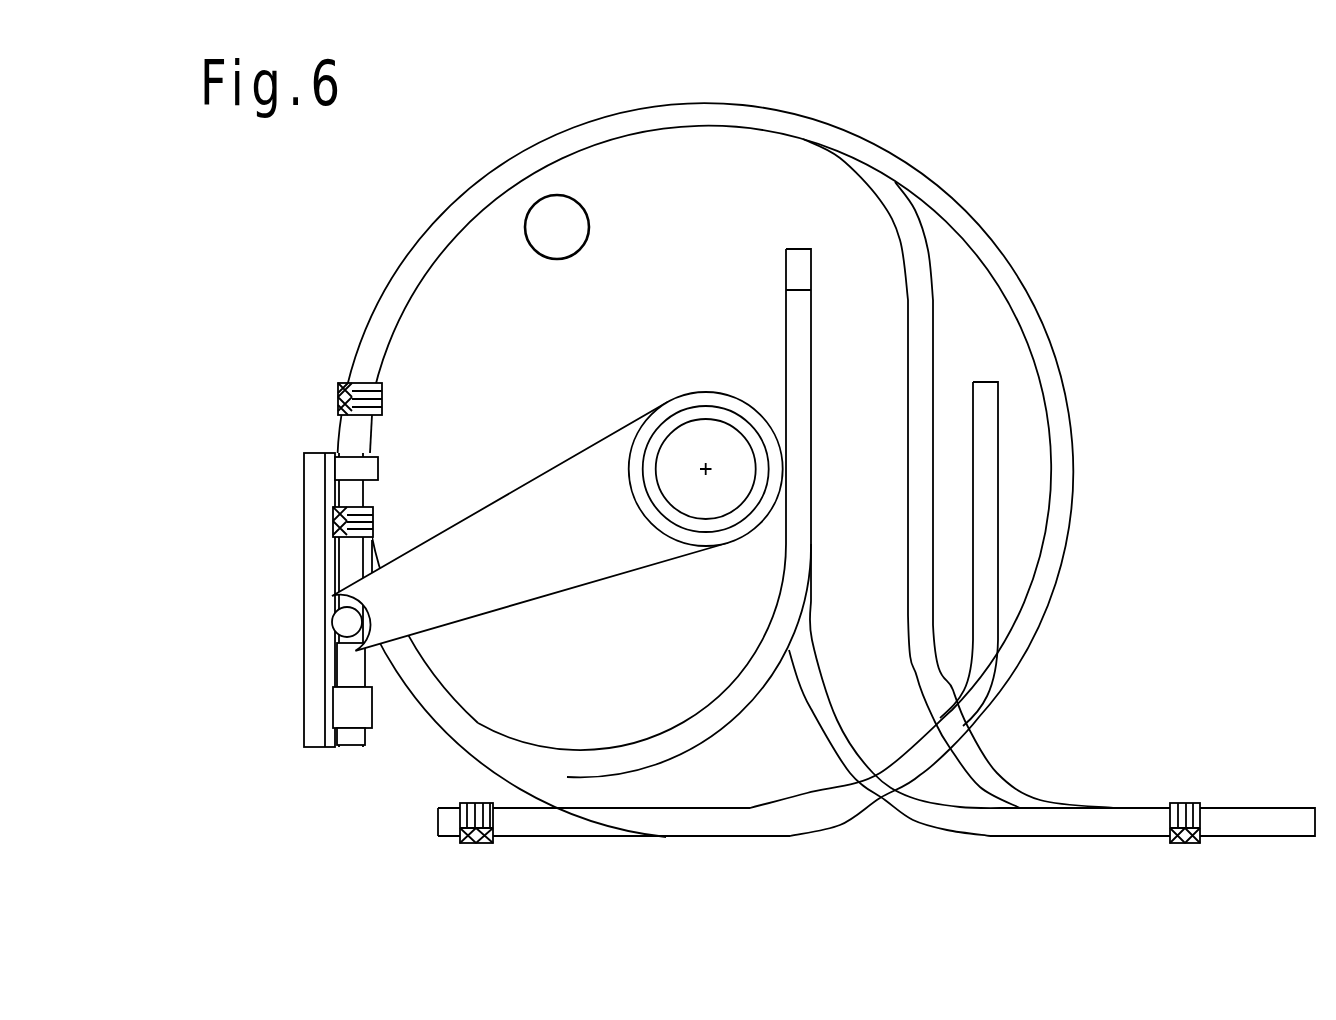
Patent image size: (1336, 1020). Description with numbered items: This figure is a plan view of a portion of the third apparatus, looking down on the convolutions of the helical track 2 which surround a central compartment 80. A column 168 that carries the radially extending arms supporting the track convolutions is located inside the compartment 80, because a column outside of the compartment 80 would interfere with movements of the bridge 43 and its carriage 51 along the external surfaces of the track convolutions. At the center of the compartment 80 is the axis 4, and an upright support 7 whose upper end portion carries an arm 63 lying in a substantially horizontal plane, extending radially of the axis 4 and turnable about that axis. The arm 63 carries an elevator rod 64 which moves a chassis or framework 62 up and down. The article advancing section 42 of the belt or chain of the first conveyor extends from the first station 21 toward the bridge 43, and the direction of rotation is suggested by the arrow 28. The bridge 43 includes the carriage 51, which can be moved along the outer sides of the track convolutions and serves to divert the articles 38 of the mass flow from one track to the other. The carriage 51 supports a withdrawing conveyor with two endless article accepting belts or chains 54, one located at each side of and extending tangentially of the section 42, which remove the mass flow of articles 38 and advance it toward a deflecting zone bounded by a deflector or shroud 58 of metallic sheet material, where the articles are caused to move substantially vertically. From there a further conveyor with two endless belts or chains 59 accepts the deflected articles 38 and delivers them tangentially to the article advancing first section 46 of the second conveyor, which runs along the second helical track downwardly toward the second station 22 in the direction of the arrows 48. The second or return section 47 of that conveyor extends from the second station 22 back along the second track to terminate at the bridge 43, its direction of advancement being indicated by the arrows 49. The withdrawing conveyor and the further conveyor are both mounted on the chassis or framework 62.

The helical track 2 is at (1065, 305).
The axis 4 is at (706, 455).
The upright support 7 is at (678, 418).
The first station 21 is at (425, 835).
The second station 22 is at (1298, 790).
The direction of rotation 28 is at (424, 210).
The articles 38 is at (380, 395).
The article advancing section 42 is at (522, 162).
The bridge 43 is at (258, 718).
The article advancing first section 46 is at (920, 346).
The second section 47 is at (818, 710).
The arrows 48 is at (895, 415).
The arrows 49 is at (658, 718).
The carriage 51 is at (312, 440).
The article accepting belts or chains 54 is at (362, 663).
The deflector or shroud 58 is at (338, 710).
The endless belts or chains 59 is at (362, 749).
The chassis or framework 62 is at (320, 485).
The arm 63 is at (615, 447).
The elevator rod 64 is at (340, 616).
The compartment 80 is at (588, 652).
The column 168 is at (558, 215).